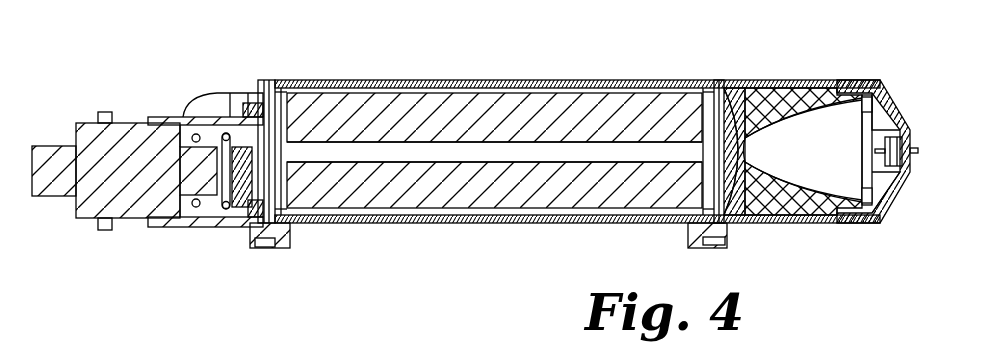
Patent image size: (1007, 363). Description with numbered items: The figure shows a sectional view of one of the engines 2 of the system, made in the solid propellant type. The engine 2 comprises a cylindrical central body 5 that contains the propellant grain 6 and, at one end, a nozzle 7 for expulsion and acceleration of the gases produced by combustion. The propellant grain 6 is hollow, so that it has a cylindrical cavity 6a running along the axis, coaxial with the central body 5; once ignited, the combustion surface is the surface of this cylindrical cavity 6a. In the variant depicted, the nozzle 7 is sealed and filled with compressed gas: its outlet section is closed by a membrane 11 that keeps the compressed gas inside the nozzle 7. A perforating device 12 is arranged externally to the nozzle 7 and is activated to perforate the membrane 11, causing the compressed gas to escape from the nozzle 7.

The engine 2 is at (551, 76).
The cylindrical central body 5 is at (480, 223).
The propellant grain 6 is at (453, 118).
The cylindrical cavity 6a is at (350, 160).
The nozzle 7 is at (810, 138).
The membrane 11 is at (882, 118).
The perforating device 12 is at (886, 154).